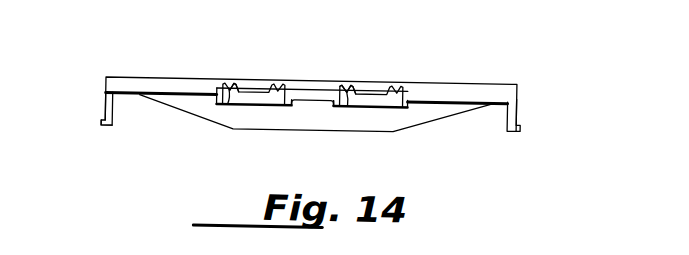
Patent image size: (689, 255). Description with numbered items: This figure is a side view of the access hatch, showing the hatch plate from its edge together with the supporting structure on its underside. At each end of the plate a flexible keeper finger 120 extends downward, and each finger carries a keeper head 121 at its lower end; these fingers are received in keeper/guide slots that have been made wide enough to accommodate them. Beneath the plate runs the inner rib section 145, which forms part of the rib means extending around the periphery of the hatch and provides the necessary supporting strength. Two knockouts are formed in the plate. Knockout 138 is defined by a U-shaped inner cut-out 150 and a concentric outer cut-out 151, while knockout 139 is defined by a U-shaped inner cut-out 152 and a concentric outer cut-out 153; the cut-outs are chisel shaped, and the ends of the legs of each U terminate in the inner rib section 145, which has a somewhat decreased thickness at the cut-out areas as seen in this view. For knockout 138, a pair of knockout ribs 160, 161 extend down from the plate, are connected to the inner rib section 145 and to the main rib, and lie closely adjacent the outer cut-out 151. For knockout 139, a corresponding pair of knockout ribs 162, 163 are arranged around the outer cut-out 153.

The flexible keeper finger 120 is at (106, 104).
The keeper head 121 is at (102, 122).
The knockout 138 is at (377, 75).
The knockout 139 is at (256, 75).
The inner rib section 145 is at (304, 86).
The U-shaped inner cut-out 150 is at (346, 84).
The concentric outer cut-out 151 is at (344, 84).
The U-shaped inner cut-out 152 is at (241, 90).
The concentric outer cut-out 153 is at (230, 86).
The knockout rib 160 is at (410, 102).
The knockout rib 161 is at (333, 102).
The knockout rib 162 is at (215, 104).
The knockout rib 163 is at (293, 104).